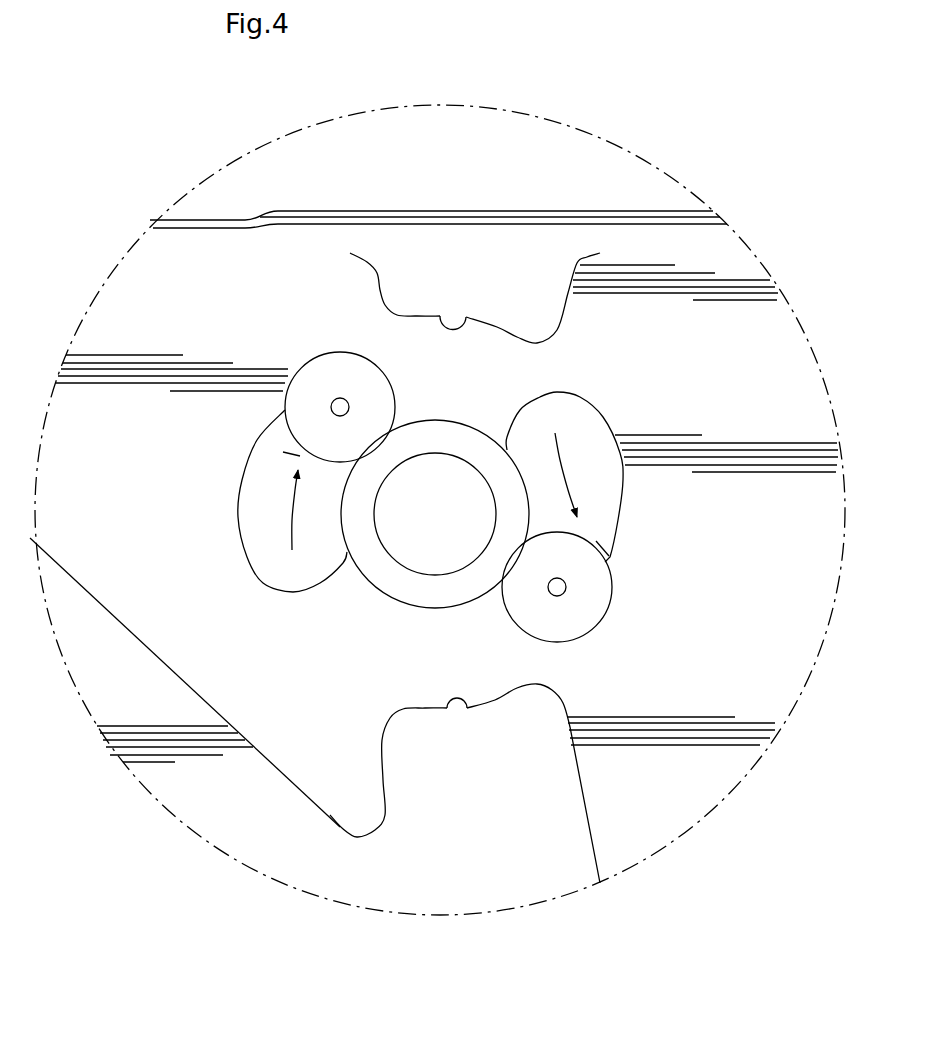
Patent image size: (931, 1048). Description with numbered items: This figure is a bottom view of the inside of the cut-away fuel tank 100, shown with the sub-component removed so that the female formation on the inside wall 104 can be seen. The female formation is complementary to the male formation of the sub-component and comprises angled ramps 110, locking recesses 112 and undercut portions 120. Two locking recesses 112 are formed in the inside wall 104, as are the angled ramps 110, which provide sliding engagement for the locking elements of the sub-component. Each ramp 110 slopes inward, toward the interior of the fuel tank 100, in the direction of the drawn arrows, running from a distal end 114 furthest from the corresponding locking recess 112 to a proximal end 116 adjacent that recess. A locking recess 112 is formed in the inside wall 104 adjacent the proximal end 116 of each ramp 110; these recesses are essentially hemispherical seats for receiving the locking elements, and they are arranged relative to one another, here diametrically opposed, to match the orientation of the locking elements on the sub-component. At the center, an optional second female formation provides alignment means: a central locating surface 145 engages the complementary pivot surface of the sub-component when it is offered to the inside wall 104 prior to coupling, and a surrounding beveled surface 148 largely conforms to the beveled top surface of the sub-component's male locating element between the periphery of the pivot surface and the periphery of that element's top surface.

The fuel tank 100 is at (273, 198).
The inside wall 104 is at (650, 315).
The angled ramp 110 is at (277, 507).
The locking recess 112 is at (322, 370).
The distal end 114 is at (277, 573).
The proximal end 116 is at (293, 445).
The undercut portion 120 is at (442, 320).
The central locating surface 145 is at (408, 555).
The beveled surface 148 is at (443, 597).